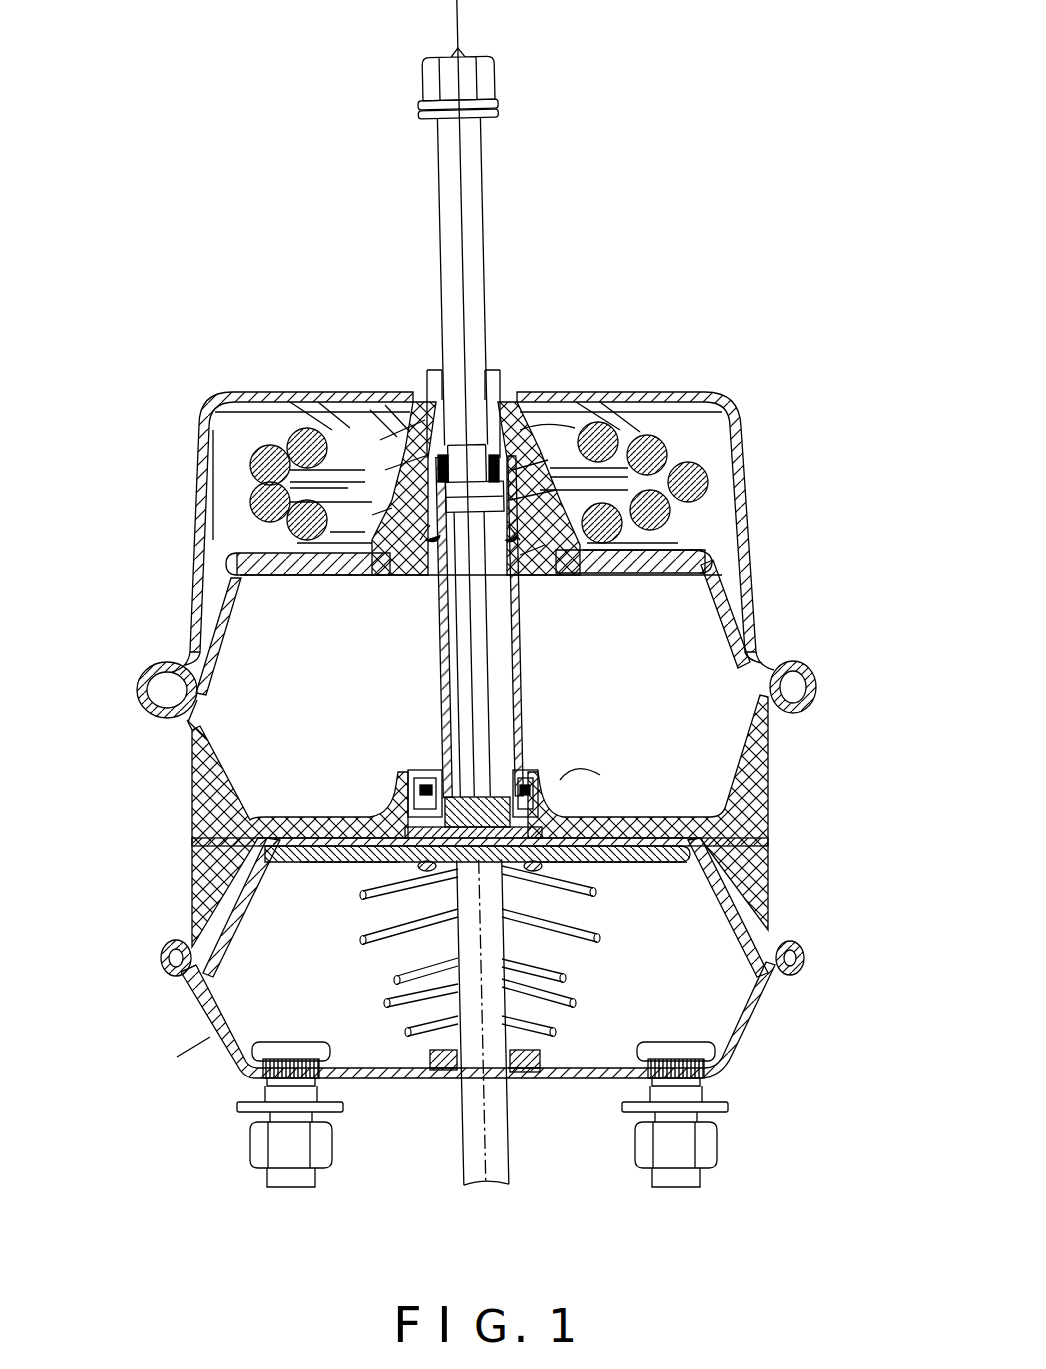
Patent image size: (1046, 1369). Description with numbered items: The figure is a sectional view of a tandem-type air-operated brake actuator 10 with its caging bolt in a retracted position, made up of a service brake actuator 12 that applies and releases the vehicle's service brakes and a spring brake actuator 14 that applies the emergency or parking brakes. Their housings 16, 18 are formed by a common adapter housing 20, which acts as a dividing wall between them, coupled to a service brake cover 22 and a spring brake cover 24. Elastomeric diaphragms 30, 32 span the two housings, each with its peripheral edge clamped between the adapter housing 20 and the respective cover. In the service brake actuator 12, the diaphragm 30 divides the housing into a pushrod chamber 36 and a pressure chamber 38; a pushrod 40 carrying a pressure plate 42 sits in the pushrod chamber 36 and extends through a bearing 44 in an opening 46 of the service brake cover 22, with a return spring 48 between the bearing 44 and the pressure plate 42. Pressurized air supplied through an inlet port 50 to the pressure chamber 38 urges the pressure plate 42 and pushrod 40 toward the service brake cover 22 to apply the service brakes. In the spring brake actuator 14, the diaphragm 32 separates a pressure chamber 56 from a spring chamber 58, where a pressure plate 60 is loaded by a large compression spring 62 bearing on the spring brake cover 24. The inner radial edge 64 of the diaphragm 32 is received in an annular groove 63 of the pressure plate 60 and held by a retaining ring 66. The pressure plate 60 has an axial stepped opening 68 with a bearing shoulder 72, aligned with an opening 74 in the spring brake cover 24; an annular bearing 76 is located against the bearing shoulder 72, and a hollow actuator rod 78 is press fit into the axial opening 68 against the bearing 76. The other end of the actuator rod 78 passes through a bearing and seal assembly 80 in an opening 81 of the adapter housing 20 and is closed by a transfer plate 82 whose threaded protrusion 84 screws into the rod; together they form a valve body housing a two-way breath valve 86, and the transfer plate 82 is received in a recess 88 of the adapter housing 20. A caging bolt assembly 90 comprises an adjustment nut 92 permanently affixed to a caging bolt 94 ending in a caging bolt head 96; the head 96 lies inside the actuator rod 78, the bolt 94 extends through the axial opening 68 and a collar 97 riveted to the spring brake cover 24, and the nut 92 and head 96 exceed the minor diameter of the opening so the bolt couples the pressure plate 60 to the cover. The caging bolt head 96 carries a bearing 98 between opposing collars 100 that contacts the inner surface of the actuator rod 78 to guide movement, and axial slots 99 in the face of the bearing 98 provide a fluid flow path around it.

The tandem-type air-operated brake actuator 10 is at (745, 238).
The service brake actuator 12 is at (197, 1077).
The spring brake actuator 14 is at (160, 565).
The service brake housing 16 is at (738, 1066).
The spring brake housing 18 is at (774, 752).
The adapter housing 20 is at (770, 817).
The service brake cover 22 is at (765, 1005).
The spring brake cover 24 is at (744, 478).
The diaphragm 30 is at (222, 927).
The diaphragm 32 is at (230, 612).
The pushrod chamber 36 is at (693, 984).
The pressure chamber 38 is at (722, 850).
The pushrod 40 is at (488, 1143).
The pressure plate 42 is at (653, 862).
The bearing 44 is at (443, 1083).
The opening 46 is at (540, 1078).
The return spring 48 is at (392, 980).
The inlet port 50 is at (195, 840).
The pressure chamber 56 is at (750, 628).
The spring chamber 58 is at (706, 520).
The pressure plate 60 is at (643, 557).
The compression spring 62 is at (292, 428).
The annular groove 63 is at (535, 560).
The inner radial edge 64 is at (514, 560).
The retaining ring 66 is at (410, 540).
The axial stepped opening 68 is at (400, 420).
The bearing shoulder 72 is at (409, 372).
The opening 74 is at (505, 420).
The annular bearing 76 is at (528, 440).
The hollow actuator rod 78 is at (428, 663).
The bearing and seal assembly 80 is at (512, 768).
The opening 81 is at (430, 773).
The transfer plate 82 is at (412, 810).
The threaded protrusion 84 is at (548, 826).
The two-way breath valve 86 is at (492, 772).
The recess 88 is at (590, 827).
The caging bolt assembly 90 is at (531, 241).
The adjustment nut 92 is at (497, 72).
The caging bolt 94 is at (483, 302).
The caging bolt head 96 is at (462, 535).
The collar 97 is at (503, 385).
The bearing 98 is at (548, 455).
The axial slots 99 is at (372, 517).
The collars 100 is at (437, 537).